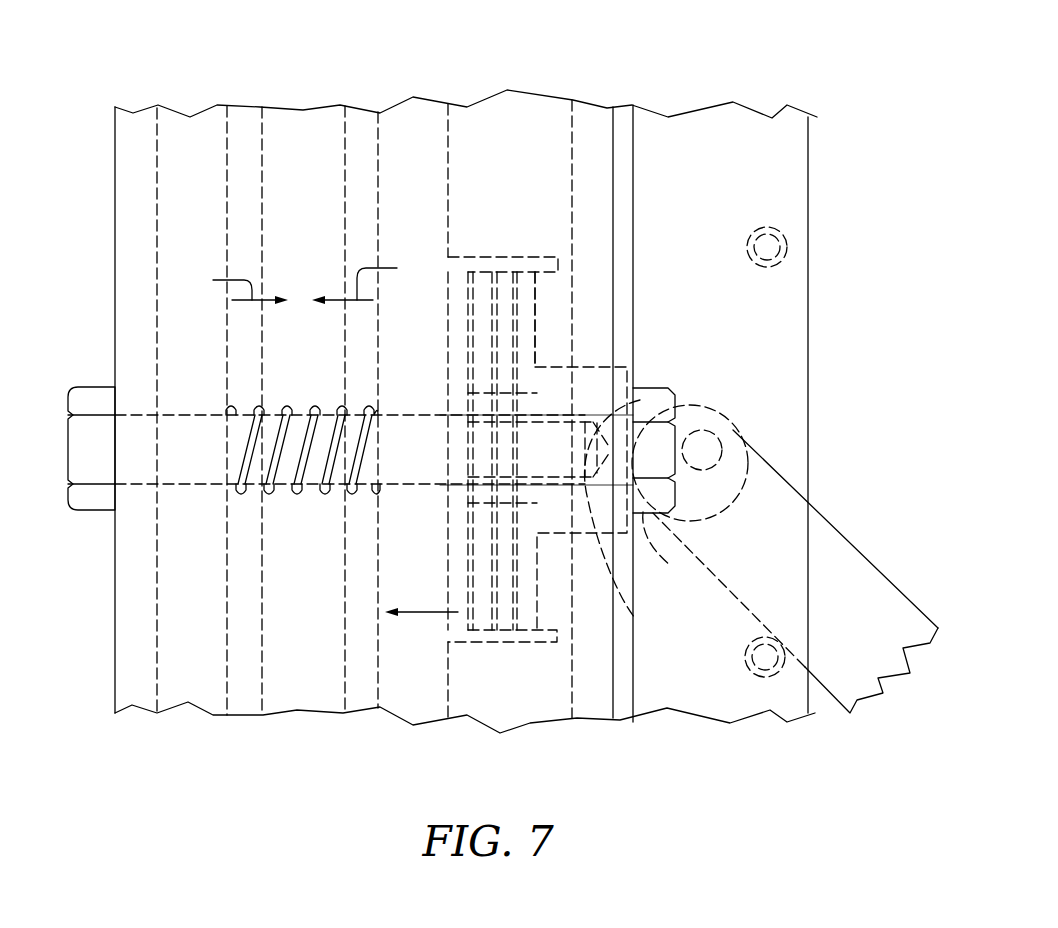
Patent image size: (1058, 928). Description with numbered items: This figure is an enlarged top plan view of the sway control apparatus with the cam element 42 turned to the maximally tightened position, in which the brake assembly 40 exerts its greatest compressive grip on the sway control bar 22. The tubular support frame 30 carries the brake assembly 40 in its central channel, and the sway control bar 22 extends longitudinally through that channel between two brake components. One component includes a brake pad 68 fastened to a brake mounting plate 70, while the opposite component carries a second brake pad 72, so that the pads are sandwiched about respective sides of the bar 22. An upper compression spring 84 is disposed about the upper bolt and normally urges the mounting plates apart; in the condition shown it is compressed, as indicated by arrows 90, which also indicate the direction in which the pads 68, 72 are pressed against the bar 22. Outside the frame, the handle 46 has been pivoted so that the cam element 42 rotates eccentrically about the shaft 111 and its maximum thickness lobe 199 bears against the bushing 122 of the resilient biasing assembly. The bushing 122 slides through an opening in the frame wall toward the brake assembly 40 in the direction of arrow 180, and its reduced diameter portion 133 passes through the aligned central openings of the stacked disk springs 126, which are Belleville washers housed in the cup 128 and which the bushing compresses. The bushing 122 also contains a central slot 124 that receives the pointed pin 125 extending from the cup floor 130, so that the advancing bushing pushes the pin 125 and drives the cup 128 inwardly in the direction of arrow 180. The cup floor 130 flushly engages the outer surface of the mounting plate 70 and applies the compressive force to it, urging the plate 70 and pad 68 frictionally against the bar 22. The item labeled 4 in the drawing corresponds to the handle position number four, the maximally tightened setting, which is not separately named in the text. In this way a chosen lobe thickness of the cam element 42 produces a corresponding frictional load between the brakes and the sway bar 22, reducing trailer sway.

The angle bracket 4 is at (827, 513).
The sway control bar 22 is at (280, 687).
The support frame 30 is at (633, 270).
The brake assembly 40 is at (380, 113).
The cam element 42 is at (693, 405).
The handle 46 is at (860, 548).
The brake pad 68 is at (357, 128).
The brake mounting plate 70 is at (410, 135).
The brake pad 72 is at (235, 128).
The upper compression spring 84 is at (315, 393).
The compression arrows 90 is at (305, 278).
The shaft 111 is at (742, 425).
The bushing 122 is at (597, 367).
The central slot 124 is at (635, 618).
The pointed pin 125 is at (630, 372).
The disk springs 126 is at (537, 297).
The cup 128 is at (507, 642).
The cup floor 130 is at (448, 283).
The reduced diameter portion 133 is at (480, 392).
The arrow 180 is at (413, 612).
The maximum thickness lobe 199 is at (674, 556).